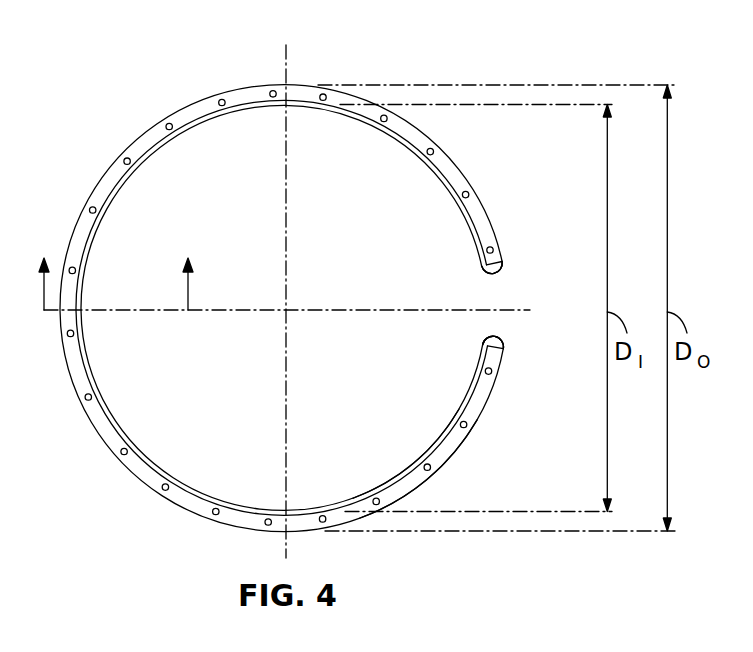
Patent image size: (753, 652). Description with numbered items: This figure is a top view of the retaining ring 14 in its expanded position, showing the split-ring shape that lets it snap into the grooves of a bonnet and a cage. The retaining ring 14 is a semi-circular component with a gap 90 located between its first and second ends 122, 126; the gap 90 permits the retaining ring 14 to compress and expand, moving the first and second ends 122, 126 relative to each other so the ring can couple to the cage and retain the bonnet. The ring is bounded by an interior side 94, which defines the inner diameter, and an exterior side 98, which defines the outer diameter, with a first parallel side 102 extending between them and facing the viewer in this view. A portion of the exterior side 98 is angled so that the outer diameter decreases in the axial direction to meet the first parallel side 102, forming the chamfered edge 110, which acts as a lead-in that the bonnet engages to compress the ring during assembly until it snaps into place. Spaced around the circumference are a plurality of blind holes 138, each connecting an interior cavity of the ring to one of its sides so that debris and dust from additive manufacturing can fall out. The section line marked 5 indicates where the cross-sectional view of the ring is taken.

The retaining ring 14 is at (302, 271).
The chamfered edge 110 is at (112, 178).
The first parallel side 102 is at (235, 109).
The blind hole 138 is at (170, 123).
The interior side 94 is at (400, 473).
The exterior side 98 is at (438, 476).
The first end 122 is at (497, 268).
The second end 126 is at (502, 340).
The gap 90 is at (527, 310).
The section line for FIG. 5 is at (116, 269).